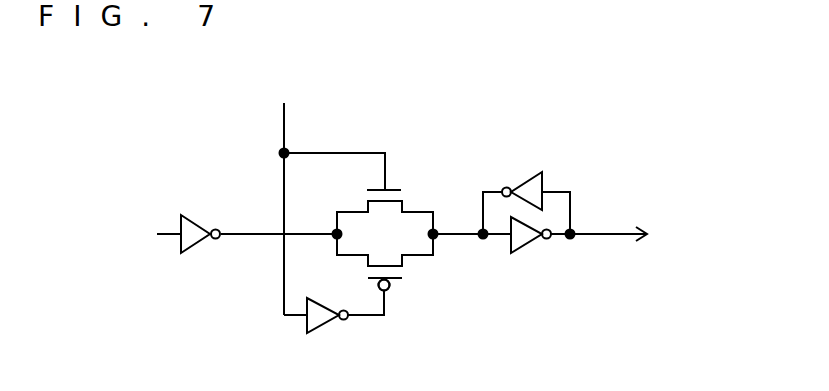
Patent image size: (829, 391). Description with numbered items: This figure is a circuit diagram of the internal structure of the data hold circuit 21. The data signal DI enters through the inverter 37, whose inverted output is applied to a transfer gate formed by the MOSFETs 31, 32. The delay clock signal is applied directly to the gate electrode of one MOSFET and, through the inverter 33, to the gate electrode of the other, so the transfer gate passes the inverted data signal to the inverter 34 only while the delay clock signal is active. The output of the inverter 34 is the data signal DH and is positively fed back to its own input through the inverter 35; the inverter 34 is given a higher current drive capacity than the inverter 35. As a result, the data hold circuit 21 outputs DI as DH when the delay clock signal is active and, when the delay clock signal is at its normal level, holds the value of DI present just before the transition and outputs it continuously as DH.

The data hold circuit 21 is at (700, 156).
The MOSFET 31 is at (405, 197).
The MOSFET 32 is at (405, 270).
The inverter 33 is at (327, 322).
The inverter 34 is at (532, 243).
The inverter 35 is at (542, 182).
The inverter 37 is at (200, 227).